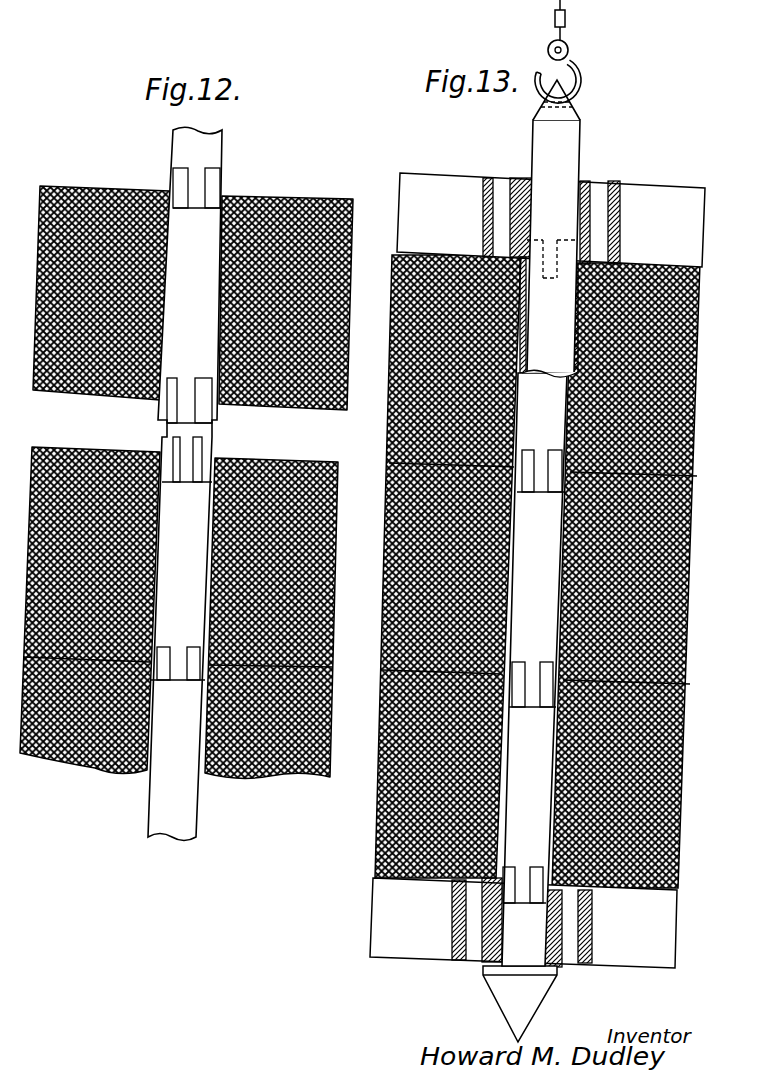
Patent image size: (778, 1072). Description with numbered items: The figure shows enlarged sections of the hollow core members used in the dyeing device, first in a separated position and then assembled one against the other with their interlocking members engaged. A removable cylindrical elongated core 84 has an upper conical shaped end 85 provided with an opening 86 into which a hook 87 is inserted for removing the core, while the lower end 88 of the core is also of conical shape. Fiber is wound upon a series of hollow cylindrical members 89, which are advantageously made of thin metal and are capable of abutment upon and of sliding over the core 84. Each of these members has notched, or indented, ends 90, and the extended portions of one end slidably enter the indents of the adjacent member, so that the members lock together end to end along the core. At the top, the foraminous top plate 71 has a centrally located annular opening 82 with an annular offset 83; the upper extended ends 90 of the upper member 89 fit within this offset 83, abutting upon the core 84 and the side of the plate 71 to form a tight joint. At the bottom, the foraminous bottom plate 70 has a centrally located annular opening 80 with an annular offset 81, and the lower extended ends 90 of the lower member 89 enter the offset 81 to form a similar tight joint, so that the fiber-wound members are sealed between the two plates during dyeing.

In FIG. 13, the bottom plate 70 is at (393, 910).
In FIG. 13, the top plate 71 is at (687, 230).
In FIG. 13, the annular opening 80 is at (533, 968).
In FIG. 13, the annular offset 81 is at (497, 917).
In FIG. 13, the annular opening 82 is at (527, 220).
In FIG. 13, the annular offset 83 is at (522, 222).
In FIG. 13, the core 84 is at (565, 148).
In FIG. 13, the upper conical shaped end 85 is at (563, 115).
In FIG. 13, the opening 86 is at (547, 100).
In FIG. 13, the hook 87 is at (577, 63).
In FIG. 13, the lower end 88 is at (533, 1002).
In FIG. 12, the hollow cylindrical member 89 is at (185, 483).
In FIG. 13, the hollow cylindrical member 89 is at (525, 312).
In FIG. 12, the notched end 90 is at (208, 182).